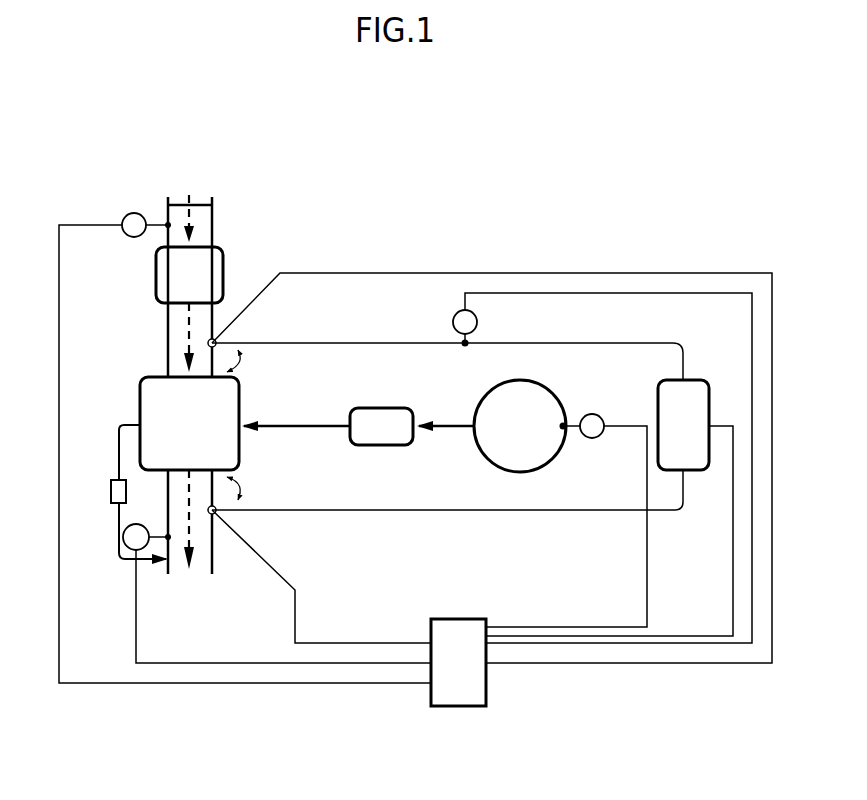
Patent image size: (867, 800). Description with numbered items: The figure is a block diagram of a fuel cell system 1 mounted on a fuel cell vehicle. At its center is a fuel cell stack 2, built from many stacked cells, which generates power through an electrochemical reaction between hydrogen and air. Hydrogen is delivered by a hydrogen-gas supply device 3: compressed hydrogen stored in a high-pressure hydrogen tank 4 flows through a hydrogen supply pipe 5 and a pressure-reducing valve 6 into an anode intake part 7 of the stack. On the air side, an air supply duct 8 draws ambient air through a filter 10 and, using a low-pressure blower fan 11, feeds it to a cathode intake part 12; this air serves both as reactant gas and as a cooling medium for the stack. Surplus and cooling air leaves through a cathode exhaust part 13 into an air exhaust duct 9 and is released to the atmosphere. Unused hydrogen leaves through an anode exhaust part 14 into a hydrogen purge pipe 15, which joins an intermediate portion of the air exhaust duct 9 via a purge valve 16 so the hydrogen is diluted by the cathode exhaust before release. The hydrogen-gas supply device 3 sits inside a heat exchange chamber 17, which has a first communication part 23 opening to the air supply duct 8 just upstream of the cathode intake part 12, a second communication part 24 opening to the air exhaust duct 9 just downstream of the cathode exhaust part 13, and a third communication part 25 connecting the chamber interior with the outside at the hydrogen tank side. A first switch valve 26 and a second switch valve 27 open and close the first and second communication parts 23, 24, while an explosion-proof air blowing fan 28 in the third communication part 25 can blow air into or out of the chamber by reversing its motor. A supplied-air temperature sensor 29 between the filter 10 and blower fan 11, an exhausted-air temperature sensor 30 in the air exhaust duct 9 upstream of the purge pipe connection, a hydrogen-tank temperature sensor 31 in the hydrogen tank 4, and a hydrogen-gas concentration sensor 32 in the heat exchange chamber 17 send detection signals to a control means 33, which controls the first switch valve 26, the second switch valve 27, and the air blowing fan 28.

The fuel cell system 1 is at (88, 162).
The fuel cell stack 2 is at (227, 405).
The hydrogen-gas supply device 3 is at (540, 487).
The high-pressure hydrogen tank 4 is at (513, 455).
The hydrogen supply pipe 5 is at (443, 428).
The pressure-reducing valve 6 is at (378, 435).
The anode intake part 7 is at (222, 430).
The air supply duct 8 is at (155, 320).
The air exhaust duct 9 is at (205, 555).
The filter 10 is at (200, 200).
The low-pressure blower fan 11 is at (210, 265).
The cathode intake part 12 is at (180, 390).
The cathode exhaust part 13 is at (180, 467).
The anode exhaust part 14 is at (160, 415).
The hydrogen purge pipe 15 is at (118, 450).
The purge valve 16 is at (112, 497).
The heat exchange chamber 17 is at (387, 343).
The first communication part 23 is at (230, 360).
The second communication part 24 is at (218, 488).
The third communication part 25 is at (677, 505).
The first switch valve 26 is at (215, 315).
The second switch valve 27 is at (215, 515).
The air blowing fan 28 is at (690, 395).
The supplied-air temperature sensor 29 is at (132, 213).
The exhausted-air temperature sensor 30 is at (133, 545).
The hydrogen-tank temperature sensor 31 is at (594, 440).
The hydrogen-gas concentration sensor 32 is at (477, 322).
The control means 33 is at (457, 630).